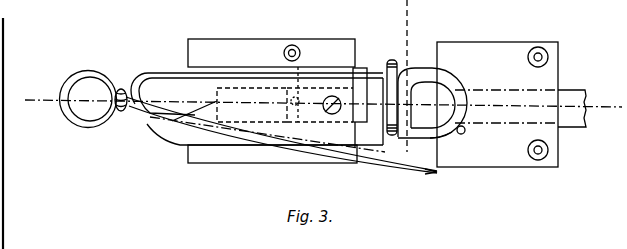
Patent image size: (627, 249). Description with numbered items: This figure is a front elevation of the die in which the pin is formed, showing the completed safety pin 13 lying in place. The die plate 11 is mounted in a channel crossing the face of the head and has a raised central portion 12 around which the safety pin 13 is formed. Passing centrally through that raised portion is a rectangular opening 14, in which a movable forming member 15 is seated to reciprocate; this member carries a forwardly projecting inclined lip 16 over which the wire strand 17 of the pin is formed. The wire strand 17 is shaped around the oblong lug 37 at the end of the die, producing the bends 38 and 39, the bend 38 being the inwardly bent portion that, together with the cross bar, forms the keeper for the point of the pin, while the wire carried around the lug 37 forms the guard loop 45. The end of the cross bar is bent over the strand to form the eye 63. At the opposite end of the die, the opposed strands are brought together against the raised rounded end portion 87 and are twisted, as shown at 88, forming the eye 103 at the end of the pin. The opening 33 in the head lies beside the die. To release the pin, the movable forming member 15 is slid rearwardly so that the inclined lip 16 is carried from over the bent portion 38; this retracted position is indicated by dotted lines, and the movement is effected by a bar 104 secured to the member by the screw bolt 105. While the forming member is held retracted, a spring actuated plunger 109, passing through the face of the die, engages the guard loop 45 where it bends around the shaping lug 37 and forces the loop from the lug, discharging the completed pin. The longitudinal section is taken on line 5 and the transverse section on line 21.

The section line 5 is at (316, 105).
The eye 103 is at (78, 72).
The twisted part of loop 88 is at (121, 88).
The safety pin 13 is at (140, 76).
The raised rounded end portion 87 is at (281, 135).
The bend 38 is at (410, 117).
The die plate 11 is at (323, 48).
The movable forming member 15 is at (290, 87).
The wire strand 17 is at (332, 75).
The rectangular opening 14 is at (252, 105).
The screw bolt 105 is at (320, 106).
The opening 33 is at (345, 100).
The raised central portion 12 is at (285, 120).
The eye 63 is at (392, 60).
The section line 21 is at (410, 83).
The inclined lip 16 is at (410, 93).
The oblong lug 37 is at (433, 97).
The guard loop 45 is at (455, 90).
The spring actuated plunger 109 is at (463, 128).
The bend 39 is at (450, 134).
The bar 104 is at (578, 96).